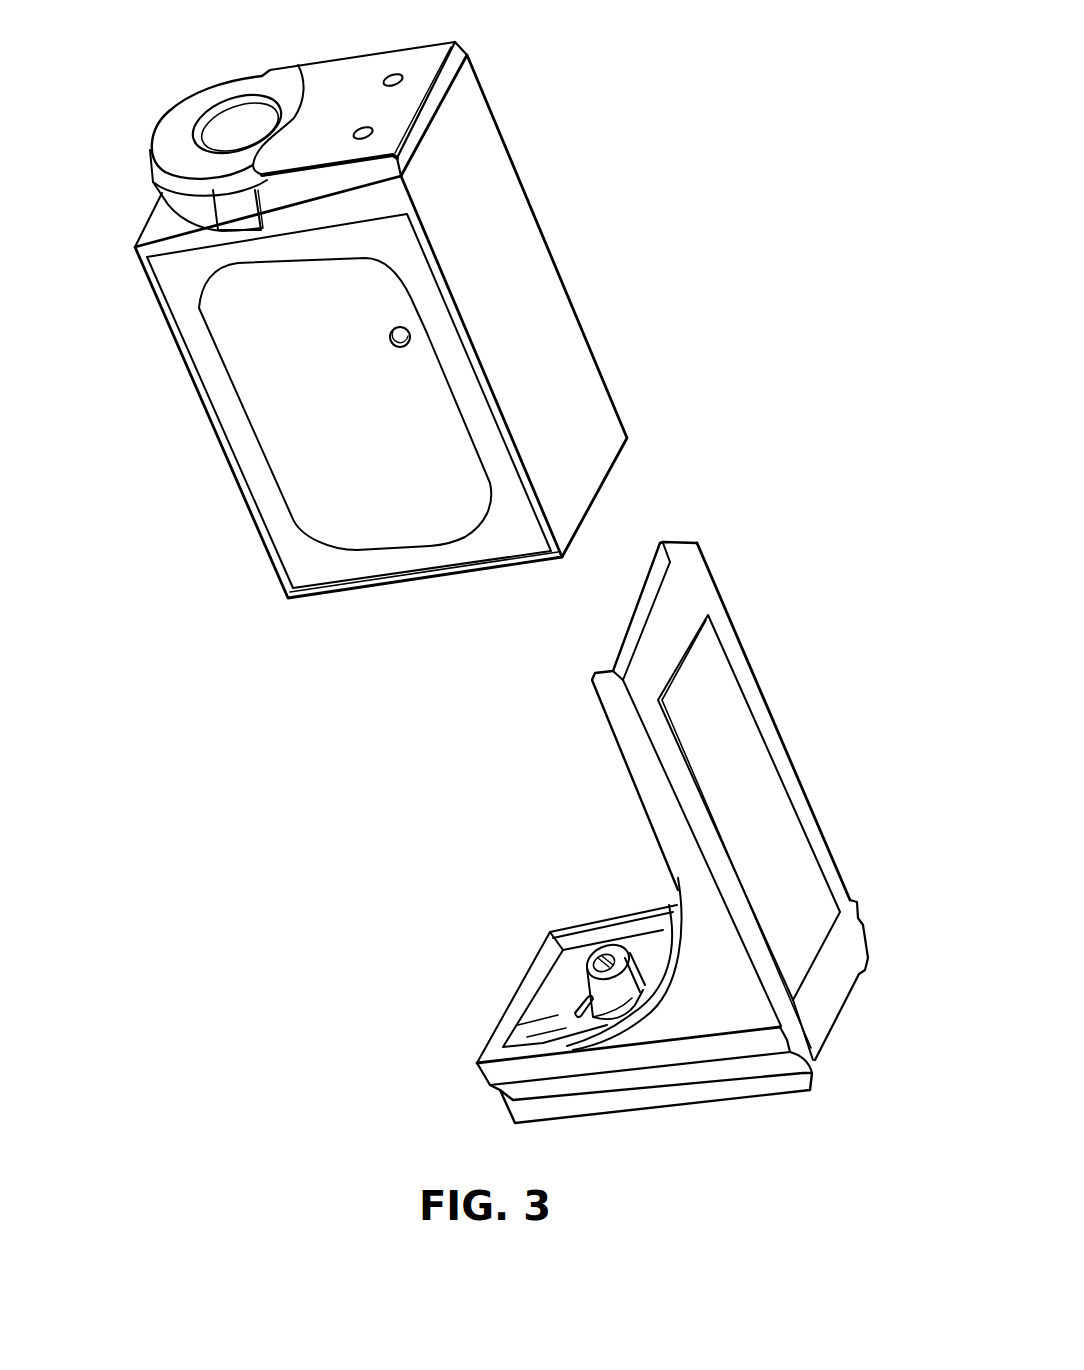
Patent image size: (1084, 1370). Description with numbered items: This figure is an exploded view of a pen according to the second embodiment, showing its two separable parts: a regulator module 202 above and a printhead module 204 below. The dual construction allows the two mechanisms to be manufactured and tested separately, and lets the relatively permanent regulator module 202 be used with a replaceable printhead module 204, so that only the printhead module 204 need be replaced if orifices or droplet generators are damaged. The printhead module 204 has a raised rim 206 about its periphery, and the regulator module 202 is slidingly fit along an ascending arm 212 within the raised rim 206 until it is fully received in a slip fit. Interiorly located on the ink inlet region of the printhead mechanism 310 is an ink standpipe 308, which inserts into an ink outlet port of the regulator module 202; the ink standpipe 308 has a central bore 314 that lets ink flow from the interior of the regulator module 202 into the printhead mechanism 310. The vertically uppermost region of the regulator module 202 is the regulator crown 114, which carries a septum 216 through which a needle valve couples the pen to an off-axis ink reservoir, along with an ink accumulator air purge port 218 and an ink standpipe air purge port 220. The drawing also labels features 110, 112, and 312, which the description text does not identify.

The hole 110 is at (390, 337).
The recess 112 is at (403, 423).
The regulator crown 114 is at (362, 202).
The regulator module 202 is at (585, 266).
The printhead module 204 is at (814, 739).
The raised rim 206 is at (673, 548).
The ascending arm 212 is at (677, 857).
The septum 216 is at (248, 123).
The ink accumulator air purge port 218 is at (387, 76).
The ink standpipe air purge port 220 is at (360, 129).
The ink standpipe 308 is at (583, 992).
The printhead mechanism 310 is at (563, 1022).
The frame 312 is at (612, 789).
The central bore 314 is at (593, 945).